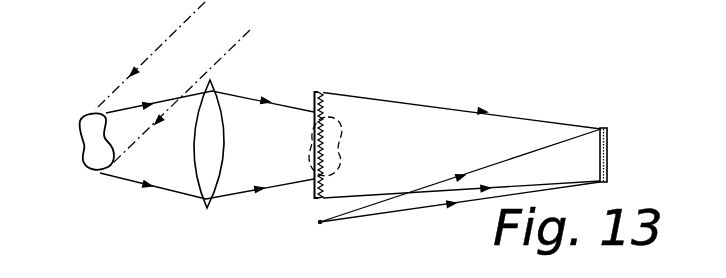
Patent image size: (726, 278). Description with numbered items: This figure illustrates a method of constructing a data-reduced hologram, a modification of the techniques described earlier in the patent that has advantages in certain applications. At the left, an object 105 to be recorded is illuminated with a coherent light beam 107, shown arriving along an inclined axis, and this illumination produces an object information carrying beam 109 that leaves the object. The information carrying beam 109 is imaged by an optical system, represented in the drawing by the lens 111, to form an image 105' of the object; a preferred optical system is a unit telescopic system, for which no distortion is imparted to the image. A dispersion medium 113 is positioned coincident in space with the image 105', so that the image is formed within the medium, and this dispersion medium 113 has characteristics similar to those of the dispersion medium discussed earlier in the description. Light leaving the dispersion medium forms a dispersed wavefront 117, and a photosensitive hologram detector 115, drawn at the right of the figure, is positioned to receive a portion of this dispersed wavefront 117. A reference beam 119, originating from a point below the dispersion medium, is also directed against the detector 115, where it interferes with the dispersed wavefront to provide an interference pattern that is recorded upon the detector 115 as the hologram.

The object 105 is at (65, 160).
The image of the object 105' is at (371, 146).
The coherent light beam 107 is at (168, 36).
The object information carrying beam 109 is at (132, 177).
The lens 111 is at (211, 190).
The dispersion medium 113 is at (316, 91).
The photosensitive hologram detector 115 is at (602, 128).
The dispersed wavefront 117 is at (412, 108).
The reference beam 119 is at (398, 205).